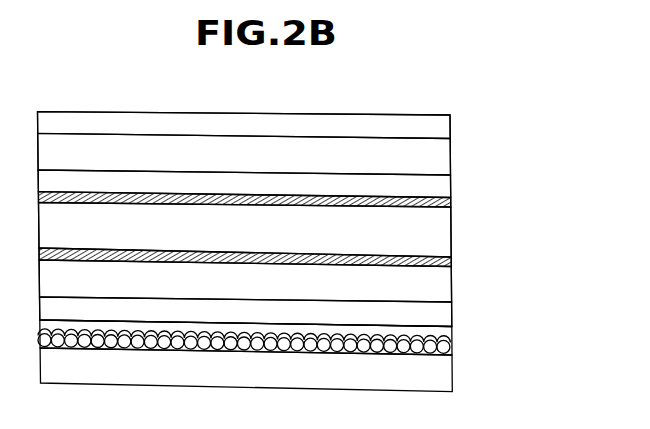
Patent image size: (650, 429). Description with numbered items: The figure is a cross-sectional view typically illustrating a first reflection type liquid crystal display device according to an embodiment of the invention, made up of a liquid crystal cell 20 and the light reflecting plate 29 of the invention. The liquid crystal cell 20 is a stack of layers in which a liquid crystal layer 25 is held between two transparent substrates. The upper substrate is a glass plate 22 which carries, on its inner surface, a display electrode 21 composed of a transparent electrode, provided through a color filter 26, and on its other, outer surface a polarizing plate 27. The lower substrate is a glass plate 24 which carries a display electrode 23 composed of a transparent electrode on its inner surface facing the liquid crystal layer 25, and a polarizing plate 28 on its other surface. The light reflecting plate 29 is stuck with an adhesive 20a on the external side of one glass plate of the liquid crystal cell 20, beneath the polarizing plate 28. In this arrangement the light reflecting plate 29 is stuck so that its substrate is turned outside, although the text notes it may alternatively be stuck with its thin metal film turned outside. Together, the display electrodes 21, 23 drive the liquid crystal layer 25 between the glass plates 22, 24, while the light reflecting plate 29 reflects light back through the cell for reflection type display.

The liquid crystal cell 20 is at (532, 125).
The polarizing plate 27 is at (450, 130).
The glass plate 22 is at (451, 162).
The color filter 26 is at (450, 184).
The display electrode 21 is at (450, 207).
The liquid crystal layer 25 is at (450, 235).
The display electrode 23 is at (450, 263).
The glass plate 24 is at (451, 290).
The polarizing plate 28 is at (451, 318).
The adhesive 20a is at (451, 337).
The light reflecting plate 29 is at (457, 343).